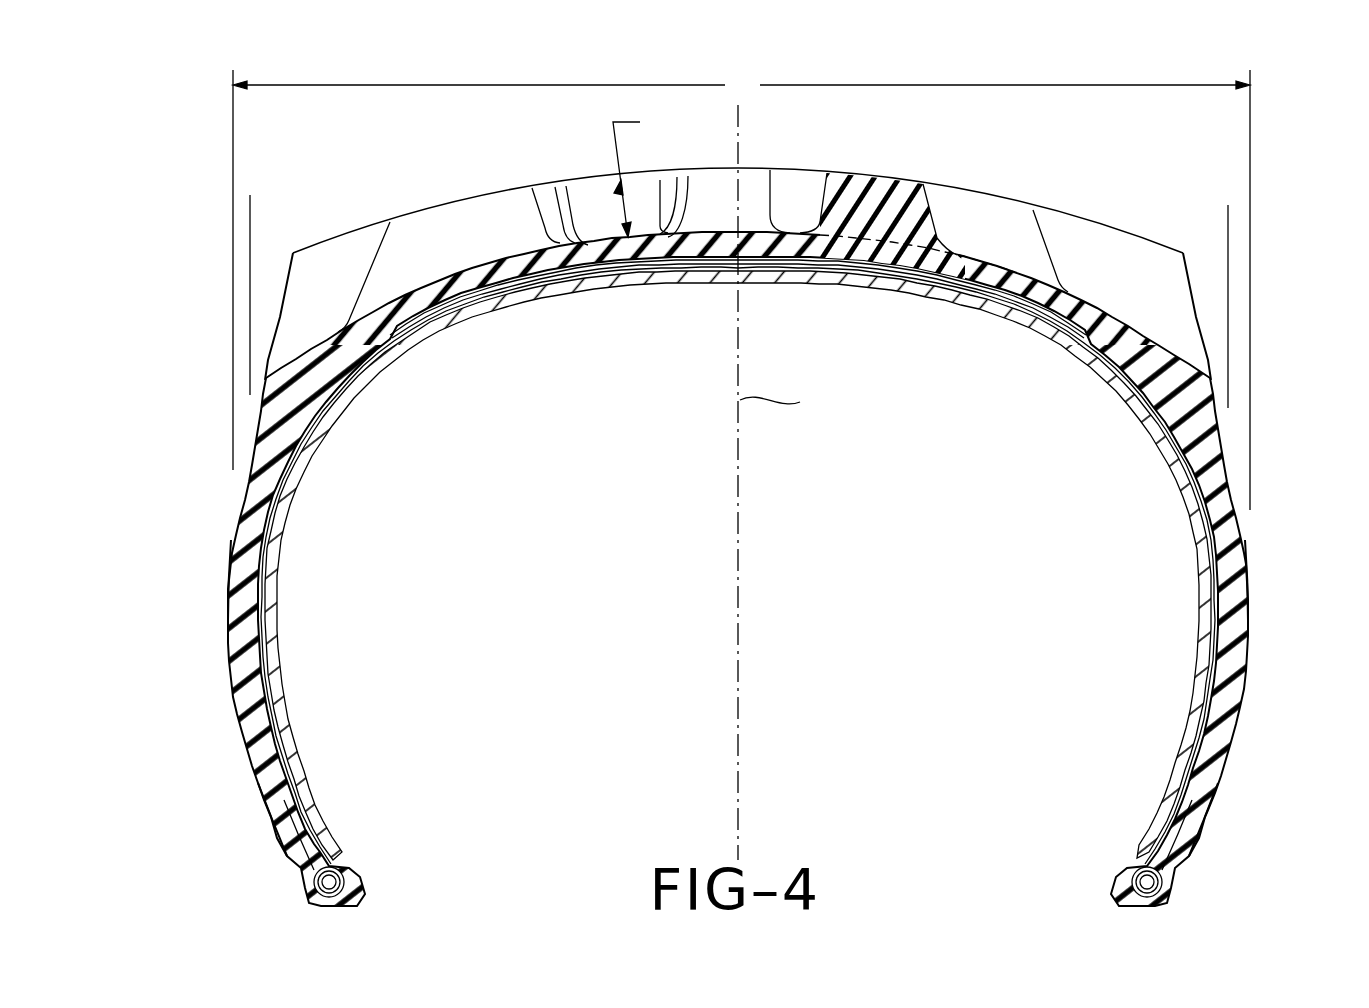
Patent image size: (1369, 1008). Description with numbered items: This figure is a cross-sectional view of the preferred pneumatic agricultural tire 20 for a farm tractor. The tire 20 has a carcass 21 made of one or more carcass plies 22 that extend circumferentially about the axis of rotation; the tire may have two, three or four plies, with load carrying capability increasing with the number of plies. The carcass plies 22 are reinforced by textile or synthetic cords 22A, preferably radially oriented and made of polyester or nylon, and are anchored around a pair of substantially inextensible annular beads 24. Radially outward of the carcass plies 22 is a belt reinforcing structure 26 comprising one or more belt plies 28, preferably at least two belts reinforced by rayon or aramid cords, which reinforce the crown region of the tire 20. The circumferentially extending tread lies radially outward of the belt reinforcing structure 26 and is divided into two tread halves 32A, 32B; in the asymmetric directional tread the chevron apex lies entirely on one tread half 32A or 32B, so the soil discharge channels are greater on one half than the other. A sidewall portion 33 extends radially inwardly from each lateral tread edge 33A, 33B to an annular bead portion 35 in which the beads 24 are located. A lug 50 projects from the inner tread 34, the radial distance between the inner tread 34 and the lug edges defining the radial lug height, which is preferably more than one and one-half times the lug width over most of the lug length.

The pneumatic agricultural tire 20 is at (1072, 160).
The carcass 21 is at (232, 637).
The carcass plies 22 is at (277, 750).
The cords 22A is at (738, 798).
The annular beads 24 is at (331, 882).
The belt reinforcing structure 26 is at (507, 297).
The belt plies 28 is at (613, 276).
The tread half 32A is at (412, 213).
The tread half 32B is at (1068, 213).
The sidewall portion 33 is at (230, 560).
The lateral tread edge 33A is at (250, 256).
The lateral tread edge 33B is at (1228, 253).
The inner tread 34 is at (738, 189).
The annular bead portion 35 is at (273, 820).
The lug 50 is at (910, 188).